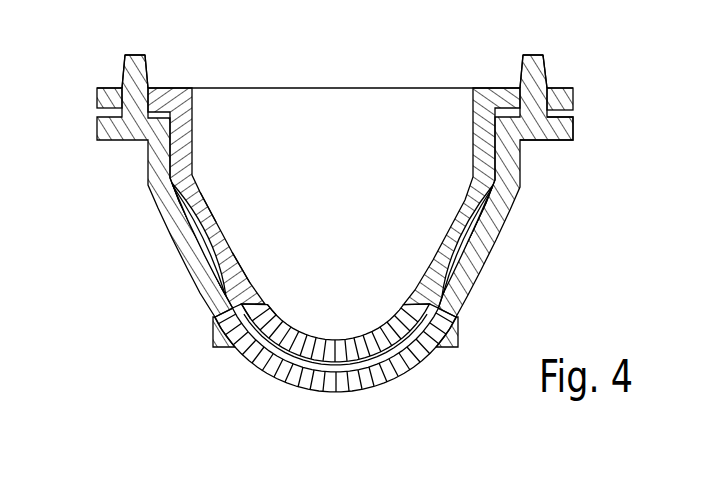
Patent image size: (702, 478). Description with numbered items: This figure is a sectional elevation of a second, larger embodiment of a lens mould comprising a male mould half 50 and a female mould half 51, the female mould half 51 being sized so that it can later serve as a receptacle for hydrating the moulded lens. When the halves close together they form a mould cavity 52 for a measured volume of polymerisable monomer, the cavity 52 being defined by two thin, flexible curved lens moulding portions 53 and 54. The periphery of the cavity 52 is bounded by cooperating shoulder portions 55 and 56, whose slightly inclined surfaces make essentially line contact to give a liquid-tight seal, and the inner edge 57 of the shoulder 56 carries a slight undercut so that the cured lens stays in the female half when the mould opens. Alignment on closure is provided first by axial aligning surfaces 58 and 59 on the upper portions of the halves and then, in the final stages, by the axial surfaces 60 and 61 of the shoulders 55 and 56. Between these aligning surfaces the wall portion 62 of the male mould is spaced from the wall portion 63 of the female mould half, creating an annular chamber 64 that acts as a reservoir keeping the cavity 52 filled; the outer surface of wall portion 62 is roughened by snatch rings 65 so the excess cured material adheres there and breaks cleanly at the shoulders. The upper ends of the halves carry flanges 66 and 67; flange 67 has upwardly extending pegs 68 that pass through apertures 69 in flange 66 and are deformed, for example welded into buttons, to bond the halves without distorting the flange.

The male mould half 50 is at (192, 133).
The female mould half 51 is at (476, 251).
The mould cavity 52 is at (287, 368).
The curved lens moulding portion 53 is at (330, 356).
The curved lens moulding portion 54 is at (383, 373).
The shoulder portion 55 is at (265, 310).
The shoulder portion 56 is at (223, 349).
The inner edge of the shoulder 57 is at (452, 316).
The axial aligning surface 58 is at (148, 172).
The axial aligning surface 59 is at (183, 172).
The axial surface of shoulder portion 60 is at (243, 283).
The axial surface of shoulder portion 61 is at (230, 332).
The wall portion of the male mould 62 is at (214, 227).
The wall portion of the female mould half 63 is at (188, 250).
The annular chamber 64 is at (170, 202).
The snatch rings 65 is at (213, 300).
The flange 66 is at (573, 92).
The flange 67 is at (573, 136).
The pegs 68 is at (126, 56).
The apertures 69 is at (97, 95).